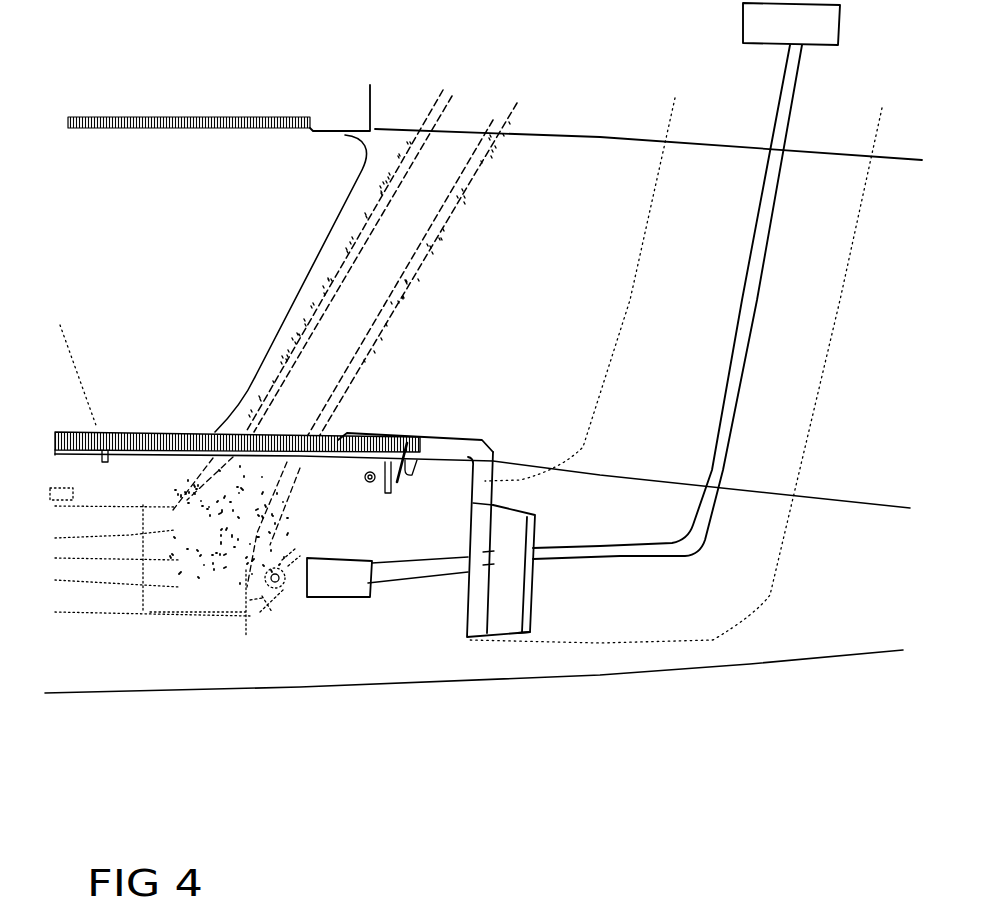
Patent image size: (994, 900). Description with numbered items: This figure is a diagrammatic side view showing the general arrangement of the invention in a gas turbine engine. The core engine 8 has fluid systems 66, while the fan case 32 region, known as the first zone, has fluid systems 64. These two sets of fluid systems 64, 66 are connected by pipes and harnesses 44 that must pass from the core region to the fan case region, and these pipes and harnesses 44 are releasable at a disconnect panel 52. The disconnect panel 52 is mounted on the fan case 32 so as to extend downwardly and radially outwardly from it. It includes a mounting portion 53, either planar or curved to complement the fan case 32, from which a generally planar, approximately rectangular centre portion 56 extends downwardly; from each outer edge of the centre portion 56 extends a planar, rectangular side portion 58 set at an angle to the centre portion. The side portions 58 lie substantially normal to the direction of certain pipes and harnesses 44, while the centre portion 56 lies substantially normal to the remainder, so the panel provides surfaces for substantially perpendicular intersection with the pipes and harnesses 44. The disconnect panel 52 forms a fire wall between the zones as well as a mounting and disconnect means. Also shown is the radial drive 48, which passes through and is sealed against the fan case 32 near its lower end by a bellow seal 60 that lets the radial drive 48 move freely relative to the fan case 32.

The core engine 8 is at (577, 27).
The fan case 32 is at (182, 452).
The pipes and harnesses 44 is at (747, 356).
The radial drive 48 is at (372, 262).
The disconnect panel 52 is at (522, 564).
The mounting portion 53 is at (420, 447).
The centre portion 56 is at (477, 598).
The side portion 58 is at (507, 620).
The bellow seal 60 is at (246, 382).
The fluid systems 64 is at (333, 585).
The fluid systems 66 is at (830, 30).